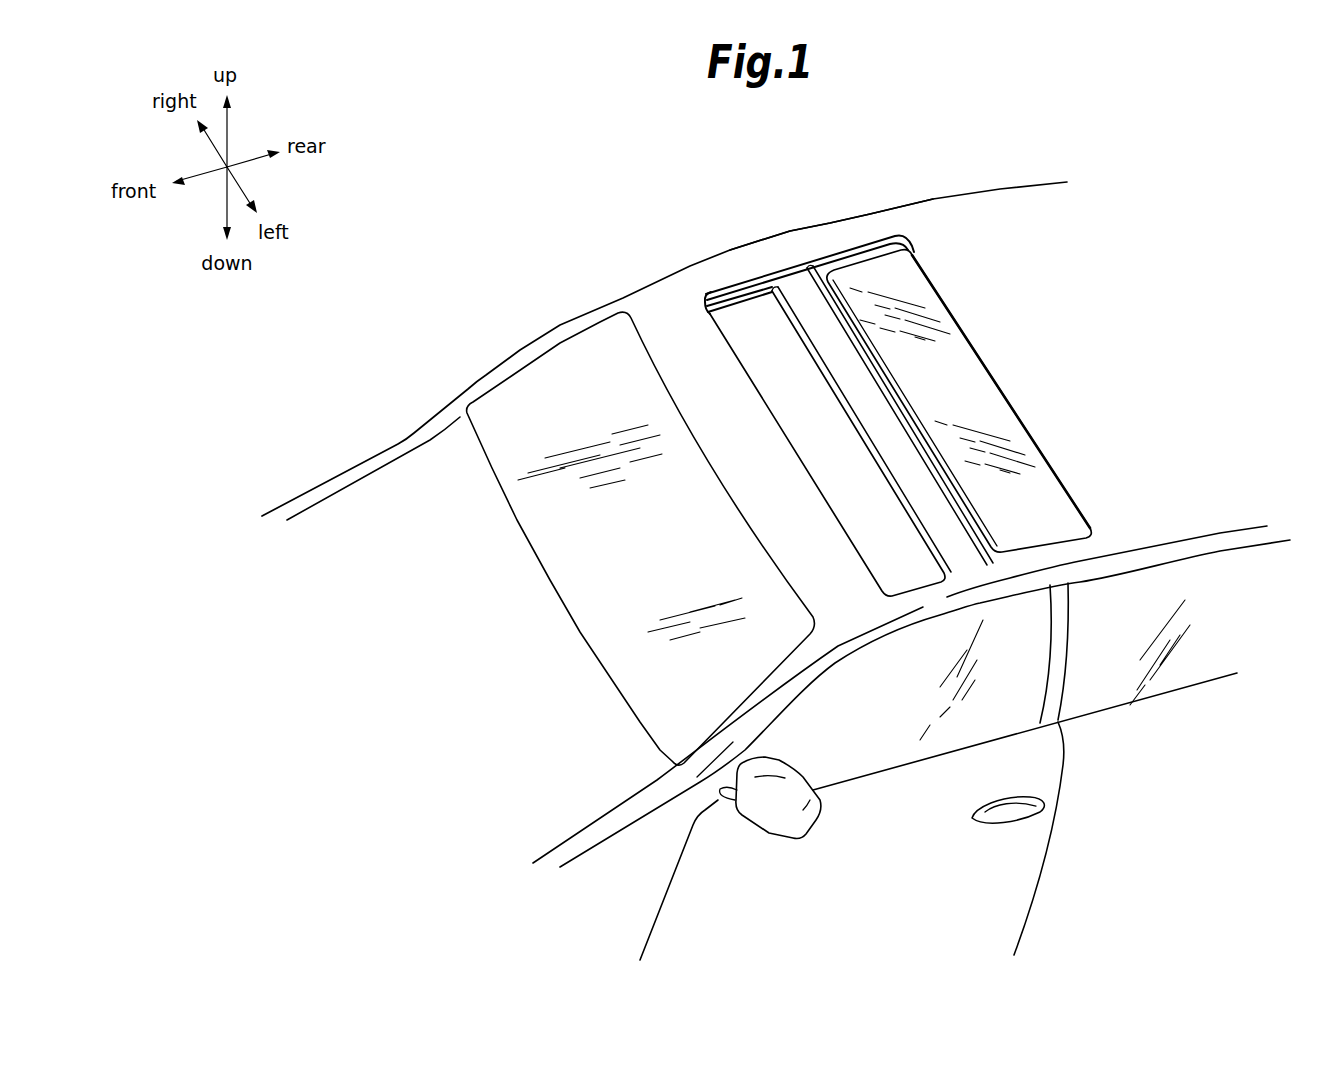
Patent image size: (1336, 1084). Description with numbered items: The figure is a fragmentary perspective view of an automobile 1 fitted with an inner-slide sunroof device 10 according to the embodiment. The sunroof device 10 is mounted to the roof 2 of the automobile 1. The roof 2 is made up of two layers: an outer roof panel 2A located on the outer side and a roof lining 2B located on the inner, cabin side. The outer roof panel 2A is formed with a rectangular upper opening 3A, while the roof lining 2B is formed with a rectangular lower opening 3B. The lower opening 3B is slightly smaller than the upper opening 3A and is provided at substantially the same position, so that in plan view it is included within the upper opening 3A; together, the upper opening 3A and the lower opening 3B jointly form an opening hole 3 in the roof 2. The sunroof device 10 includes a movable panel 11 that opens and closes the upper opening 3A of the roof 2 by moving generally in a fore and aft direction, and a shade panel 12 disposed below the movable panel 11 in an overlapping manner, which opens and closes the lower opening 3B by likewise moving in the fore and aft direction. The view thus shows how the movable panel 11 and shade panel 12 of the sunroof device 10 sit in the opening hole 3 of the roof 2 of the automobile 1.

The automobile 1 is at (541, 258).
The roof 2 is at (1033, 207).
The outer roof panel 2A is at (838, 230).
The roof lining 2B is at (752, 302).
The opening hole 3 is at (723, 153).
The upper opening 3A is at (758, 292).
The lower opening 3B is at (715, 297).
The sunroof device 10 is at (918, 252).
The movable panel 11 is at (1007, 390).
The shade panel 12 is at (920, 497).